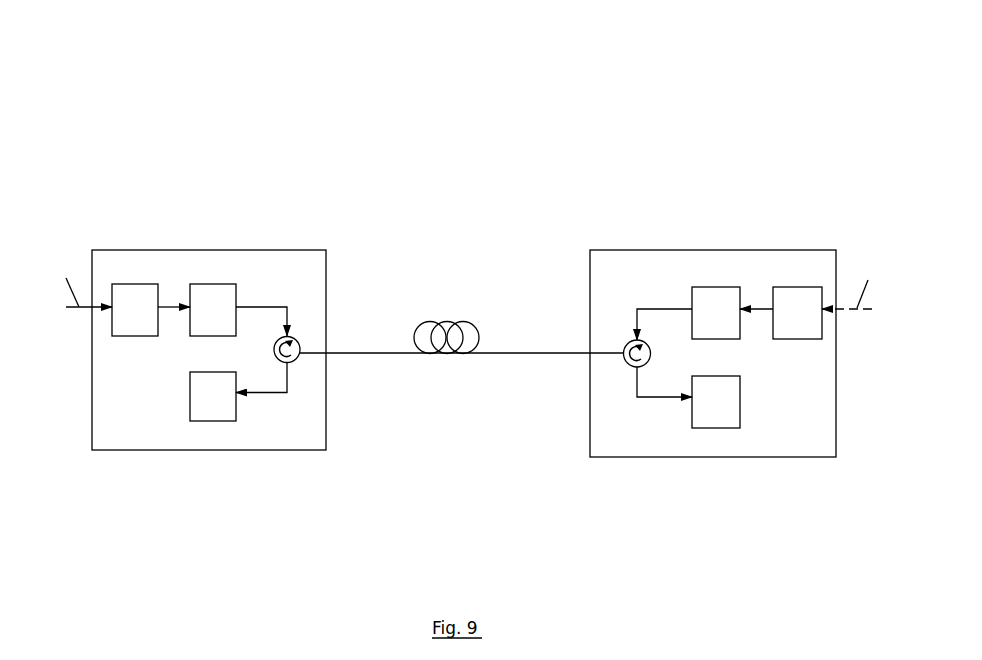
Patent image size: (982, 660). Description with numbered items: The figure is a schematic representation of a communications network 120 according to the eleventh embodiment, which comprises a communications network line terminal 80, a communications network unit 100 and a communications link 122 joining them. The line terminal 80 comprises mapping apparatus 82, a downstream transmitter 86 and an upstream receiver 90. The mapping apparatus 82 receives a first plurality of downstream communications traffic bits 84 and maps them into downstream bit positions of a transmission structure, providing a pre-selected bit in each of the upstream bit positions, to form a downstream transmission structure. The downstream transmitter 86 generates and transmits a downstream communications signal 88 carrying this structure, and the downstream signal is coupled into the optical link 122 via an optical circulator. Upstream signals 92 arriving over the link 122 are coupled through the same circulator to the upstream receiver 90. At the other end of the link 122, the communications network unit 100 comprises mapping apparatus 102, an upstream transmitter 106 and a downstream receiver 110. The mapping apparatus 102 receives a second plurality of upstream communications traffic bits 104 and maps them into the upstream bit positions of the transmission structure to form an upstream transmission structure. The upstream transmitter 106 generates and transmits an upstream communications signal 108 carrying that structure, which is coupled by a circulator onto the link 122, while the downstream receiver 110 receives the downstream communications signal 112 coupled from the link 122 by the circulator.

The communications network 120 is at (504, 100).
The communications network line terminal 80 is at (268, 238).
The mapping apparatus 82 is at (132, 293).
The downstream communications traffic bits 84 is at (72, 278).
The downstream transmitter 86 is at (203, 292).
The downstream communications signal 88 is at (293, 312).
The upstream receiver 90 is at (217, 407).
The upstream communications signal 92 is at (273, 393).
The communications network unit 100 is at (794, 238).
The mapping apparatus 102 is at (788, 287).
The upstream communications traffic bits 104 is at (858, 277).
The upstream transmitter 106 is at (718, 293).
The upstream communications signal 108 is at (657, 309).
The downstream receiver 110 is at (718, 412).
The downstream communications signal 112 is at (665, 398).
The communications link 122 is at (497, 352).